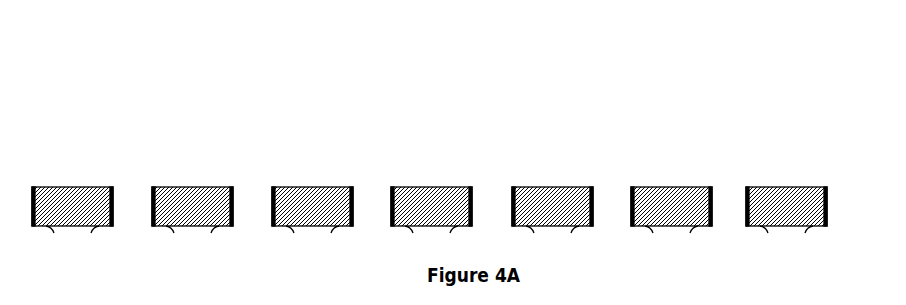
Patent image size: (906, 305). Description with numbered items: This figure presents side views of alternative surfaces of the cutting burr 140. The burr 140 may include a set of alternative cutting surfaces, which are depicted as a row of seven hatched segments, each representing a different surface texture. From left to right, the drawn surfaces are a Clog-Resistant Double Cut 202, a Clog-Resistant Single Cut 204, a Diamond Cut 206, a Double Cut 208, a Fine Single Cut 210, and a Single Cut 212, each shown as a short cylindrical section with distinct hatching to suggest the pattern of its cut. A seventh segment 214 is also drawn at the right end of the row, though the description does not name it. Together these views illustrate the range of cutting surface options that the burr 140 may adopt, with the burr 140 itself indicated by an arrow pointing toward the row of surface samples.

The burr 140 is at (102, 95).
The Clog-Resistant Double Cut 202 is at (90, 190).
The Clog-Resistant Single Cut 204 is at (192, 192).
The Diamond Cut 206 is at (300, 192).
The Double Cut 208 is at (428, 192).
The Fine Single Cut 210 is at (548, 190).
The Single Cut 212 is at (658, 190).
The seventh element 214 is at (750, 190).